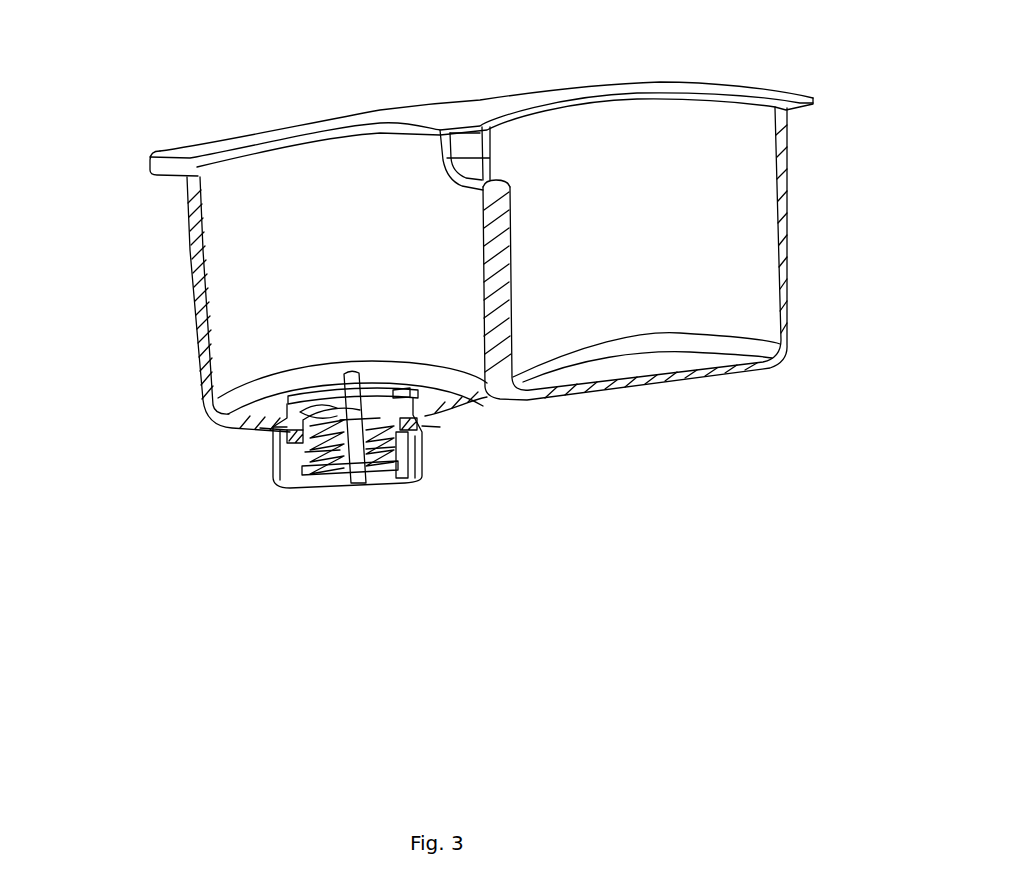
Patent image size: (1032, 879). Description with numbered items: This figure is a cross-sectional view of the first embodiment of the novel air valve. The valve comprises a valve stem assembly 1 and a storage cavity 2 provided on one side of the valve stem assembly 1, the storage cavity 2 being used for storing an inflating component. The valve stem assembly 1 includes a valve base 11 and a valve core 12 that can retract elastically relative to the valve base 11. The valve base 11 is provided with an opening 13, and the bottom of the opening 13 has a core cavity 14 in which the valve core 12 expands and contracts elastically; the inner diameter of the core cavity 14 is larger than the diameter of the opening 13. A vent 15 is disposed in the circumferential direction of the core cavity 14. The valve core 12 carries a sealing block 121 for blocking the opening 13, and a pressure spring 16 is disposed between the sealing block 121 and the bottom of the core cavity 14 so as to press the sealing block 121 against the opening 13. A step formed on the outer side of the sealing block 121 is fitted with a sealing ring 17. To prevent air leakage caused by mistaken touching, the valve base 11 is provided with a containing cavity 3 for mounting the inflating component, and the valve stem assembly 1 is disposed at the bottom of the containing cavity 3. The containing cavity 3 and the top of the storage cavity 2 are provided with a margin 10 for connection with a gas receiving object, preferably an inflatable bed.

The valve stem assembly 1 is at (177, 435).
The storage cavity 2 is at (700, 137).
The containing cavity 3 is at (290, 212).
The margin 10 is at (432, 117).
The valve base 11 is at (260, 413).
The valve core 12 is at (340, 460).
The sealing block 121 is at (370, 412).
The opening 13 is at (278, 475).
The core cavity 14 is at (412, 450).
The vent 15 is at (263, 470).
The pressure spring 16 is at (388, 452).
The sealing ring 17 is at (423, 427).